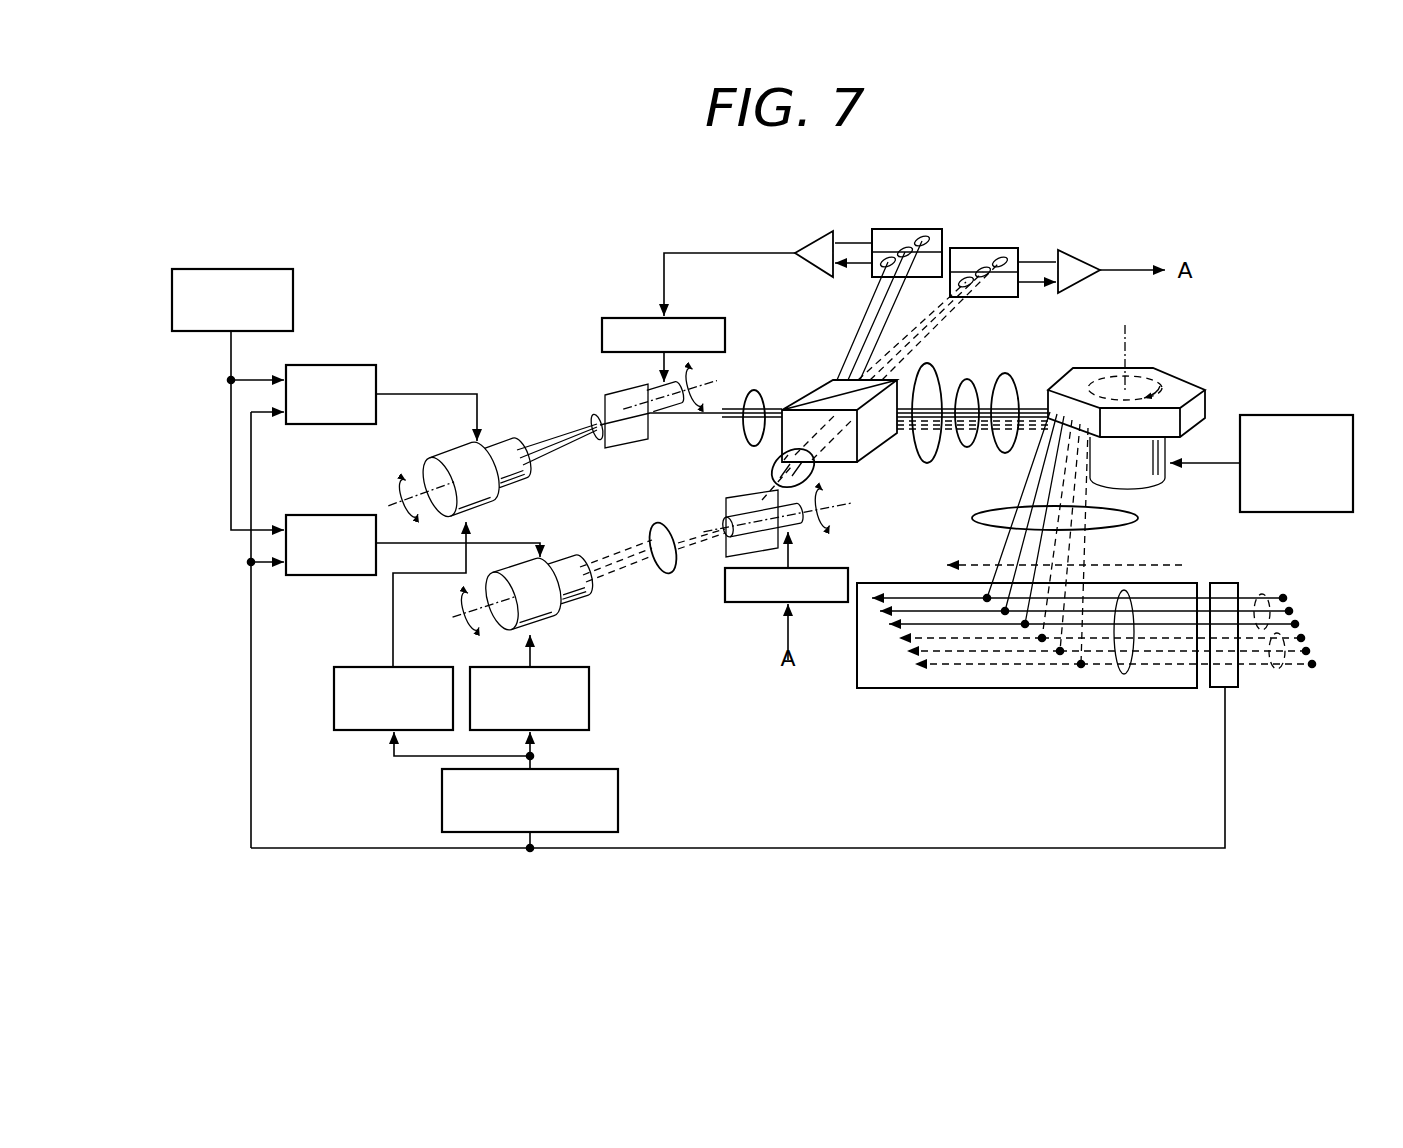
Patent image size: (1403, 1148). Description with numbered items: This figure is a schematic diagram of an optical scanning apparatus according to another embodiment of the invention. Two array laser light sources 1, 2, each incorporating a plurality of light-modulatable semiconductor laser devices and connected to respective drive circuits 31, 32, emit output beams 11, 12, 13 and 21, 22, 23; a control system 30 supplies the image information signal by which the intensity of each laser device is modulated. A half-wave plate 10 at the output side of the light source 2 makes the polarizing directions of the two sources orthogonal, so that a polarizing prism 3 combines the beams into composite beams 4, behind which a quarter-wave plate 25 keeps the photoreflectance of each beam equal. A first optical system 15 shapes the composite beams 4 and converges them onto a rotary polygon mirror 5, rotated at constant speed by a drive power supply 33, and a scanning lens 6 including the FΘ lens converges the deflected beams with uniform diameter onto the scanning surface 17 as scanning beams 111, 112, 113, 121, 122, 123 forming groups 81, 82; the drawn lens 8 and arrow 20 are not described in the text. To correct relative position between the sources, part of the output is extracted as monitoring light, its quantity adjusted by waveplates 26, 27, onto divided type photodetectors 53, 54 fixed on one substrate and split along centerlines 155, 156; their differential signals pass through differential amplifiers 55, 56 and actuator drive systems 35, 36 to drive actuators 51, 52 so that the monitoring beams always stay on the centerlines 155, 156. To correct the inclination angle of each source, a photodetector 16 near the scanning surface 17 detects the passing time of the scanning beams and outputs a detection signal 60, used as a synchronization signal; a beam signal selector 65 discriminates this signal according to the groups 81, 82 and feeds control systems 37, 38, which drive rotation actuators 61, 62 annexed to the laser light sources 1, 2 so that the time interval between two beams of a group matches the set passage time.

The laser light source 1 is at (508, 487).
The laser light source 2 is at (575, 605).
The polarizing prism 3 is at (830, 378).
The composite beams 4 is at (975, 390).
The rotary polygon mirror 5 is at (1178, 378).
The scanning lens 6 is at (1140, 518).
The lens 8 is at (1118, 675).
The half-wave plate 10 is at (668, 574).
The output beam 11 is at (518, 445).
The output beam 12 is at (552, 437).
The output beam 13 is at (583, 432).
The first optical system 15 is at (1016, 392).
The photodetector 16 is at (1226, 583).
The scanning surface 17 is at (1138, 690).
The scanning direction 20 is at (1165, 566).
The output beam 21 is at (580, 567).
The output beam 22 is at (610, 564).
The output beam 23 is at (640, 560).
The quarter-wave plate 25 is at (938, 382).
The waveplate 26 is at (760, 390).
The waveplate 27 is at (770, 462).
The control system 30 is at (293, 295).
The drive circuit 31 is at (376, 388).
The drive circuit 32 is at (338, 514).
The drive power supply 33 is at (1300, 415).
The actuator drive system 35 is at (628, 316).
The actuator drive system 36 is at (750, 603).
The control system 37 is at (362, 667).
The control system 38 is at (591, 692).
The actuator 51 is at (628, 390).
The actuator 52 is at (727, 500).
The divided type photodetector 53 is at (917, 232).
The divided type photodetector 54 is at (998, 248).
The differential amplifier 55 is at (805, 242).
The differential amplifier 56 is at (1083, 268).
The detection signal 60 is at (968, 848).
The rotation actuator 61 is at (470, 516).
The rotation actuator 62 is at (536, 634).
The beam signal selector 65 is at (620, 795).
The group of scanning beams 81 is at (1262, 593).
The group of scanning beams 82 is at (1277, 670).
The scanning beam 111 is at (1283, 597).
The scanning beam 112 is at (1289, 611).
The scanning beam 113 is at (1295, 624).
The scanning beam 121 is at (1301, 638).
The scanning beam 122 is at (1306, 651).
The scanning beam 123 is at (1312, 664).
The centerline 155 is at (882, 240).
The centerline 156 is at (965, 266).